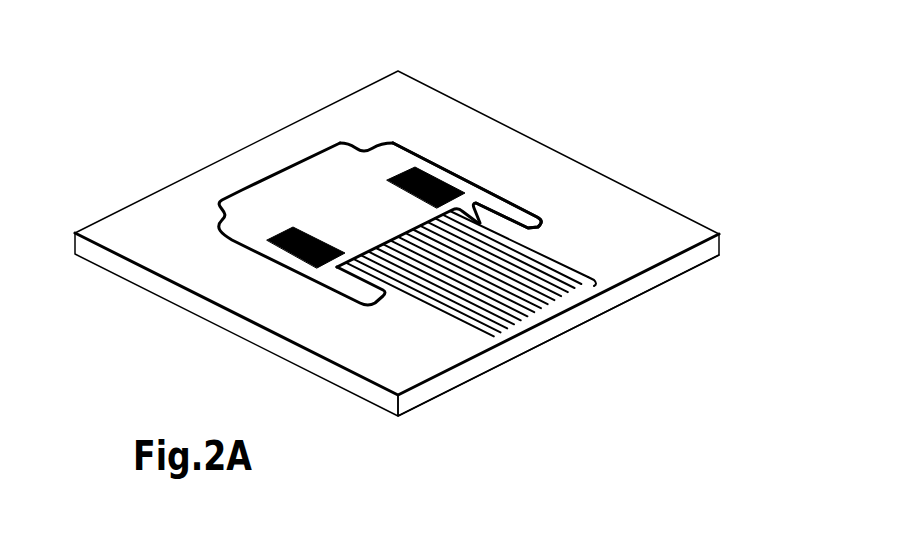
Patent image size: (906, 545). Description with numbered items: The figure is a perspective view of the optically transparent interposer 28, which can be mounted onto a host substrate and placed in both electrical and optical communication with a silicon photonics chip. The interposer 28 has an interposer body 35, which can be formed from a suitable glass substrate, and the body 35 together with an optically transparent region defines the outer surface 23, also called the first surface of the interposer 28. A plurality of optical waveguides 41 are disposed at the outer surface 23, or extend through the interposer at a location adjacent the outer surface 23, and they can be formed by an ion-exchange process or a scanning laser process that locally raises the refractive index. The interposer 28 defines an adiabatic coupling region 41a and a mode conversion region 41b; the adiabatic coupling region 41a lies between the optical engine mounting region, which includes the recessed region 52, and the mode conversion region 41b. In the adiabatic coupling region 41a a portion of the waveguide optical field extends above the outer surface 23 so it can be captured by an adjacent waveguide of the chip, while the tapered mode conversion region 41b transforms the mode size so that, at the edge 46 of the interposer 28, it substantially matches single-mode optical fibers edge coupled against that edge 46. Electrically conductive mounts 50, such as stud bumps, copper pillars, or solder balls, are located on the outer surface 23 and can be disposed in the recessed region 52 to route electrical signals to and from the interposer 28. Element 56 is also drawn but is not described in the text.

The outer surface 23 is at (353, 117).
The optically transparent interposer 28 is at (251, 137).
The interposer body 35 is at (553, 147).
The optical waveguides 41 is at (600, 287).
The adiabatic coupling region 41a is at (476, 206).
The mode conversion region 41b is at (480, 223).
The edge 46 is at (468, 372).
The electrically conductive mounts 50 is at (280, 247).
The recessed region 52 is at (240, 189).
The contact pad 56 is at (370, 256).